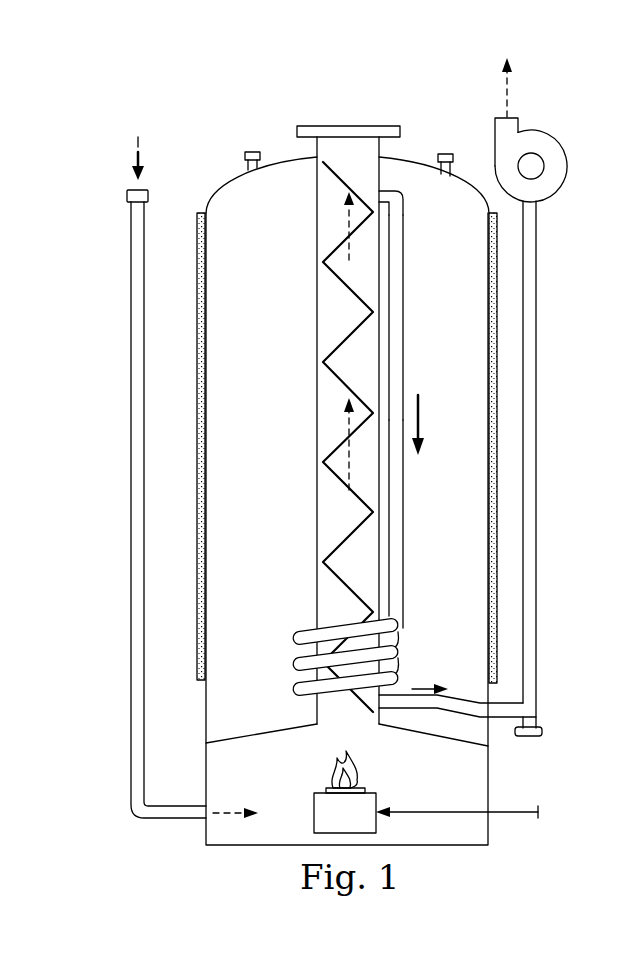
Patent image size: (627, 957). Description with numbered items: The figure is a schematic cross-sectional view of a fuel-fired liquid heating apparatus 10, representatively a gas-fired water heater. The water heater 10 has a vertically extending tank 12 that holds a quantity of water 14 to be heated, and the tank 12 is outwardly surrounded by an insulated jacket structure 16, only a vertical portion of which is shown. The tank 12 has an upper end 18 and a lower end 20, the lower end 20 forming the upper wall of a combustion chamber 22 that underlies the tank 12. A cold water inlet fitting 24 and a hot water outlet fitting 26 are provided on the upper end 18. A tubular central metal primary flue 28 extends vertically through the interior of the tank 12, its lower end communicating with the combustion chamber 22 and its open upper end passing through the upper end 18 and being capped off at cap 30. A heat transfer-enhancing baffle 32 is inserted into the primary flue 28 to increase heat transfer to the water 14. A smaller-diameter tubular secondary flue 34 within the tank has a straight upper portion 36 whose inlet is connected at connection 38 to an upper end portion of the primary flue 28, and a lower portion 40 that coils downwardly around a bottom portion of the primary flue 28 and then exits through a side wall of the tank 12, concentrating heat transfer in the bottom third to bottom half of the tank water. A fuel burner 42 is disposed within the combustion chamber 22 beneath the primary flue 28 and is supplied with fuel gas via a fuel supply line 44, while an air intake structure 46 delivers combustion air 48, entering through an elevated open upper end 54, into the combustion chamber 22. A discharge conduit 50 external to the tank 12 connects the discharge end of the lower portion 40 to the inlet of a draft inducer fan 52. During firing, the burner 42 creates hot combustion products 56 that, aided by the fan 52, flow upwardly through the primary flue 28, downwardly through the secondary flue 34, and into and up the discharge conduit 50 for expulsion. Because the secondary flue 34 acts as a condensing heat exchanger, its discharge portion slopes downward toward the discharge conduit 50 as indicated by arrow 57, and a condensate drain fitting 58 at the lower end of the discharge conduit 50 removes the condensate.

The fuel-fired liquid heating apparatus 10 is at (226, 110).
The tank 12 is at (200, 714).
The water 14 is at (246, 559).
The insulated jacket structure 16 is at (200, 512).
The upper end 18 is at (235, 173).
The lower end 20 is at (258, 737).
The combustion chamber 22 is at (420, 788).
The cold water inlet fitting 24 is at (244, 157).
The hot water outlet fitting 26 is at (447, 152).
The primary flue 28 is at (322, 334).
The cap 30 is at (350, 125).
The heat transfer-enhancing baffle 32 is at (319, 243).
The secondary flue 34 is at (408, 546).
The straight upper portion 36 is at (404, 318).
The inlet portion connection 38 is at (402, 192).
The lower portion 40 is at (293, 664).
The fuel burner 42 is at (333, 825).
The fuel supply line 44 is at (538, 818).
The air intake structure 46 is at (173, 819).
The combustion air 48 is at (138, 135).
The discharge conduit 50 is at (537, 452).
The draft inducer fan 52 is at (568, 164).
The open upper end 54 is at (127, 197).
The hot combustion products 56 is at (362, 197).
The arrow 57 is at (420, 686).
The condensate drain fitting 58 is at (530, 737).